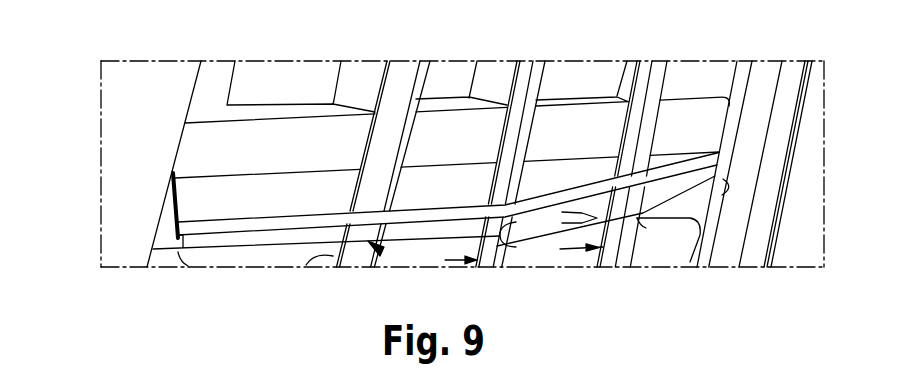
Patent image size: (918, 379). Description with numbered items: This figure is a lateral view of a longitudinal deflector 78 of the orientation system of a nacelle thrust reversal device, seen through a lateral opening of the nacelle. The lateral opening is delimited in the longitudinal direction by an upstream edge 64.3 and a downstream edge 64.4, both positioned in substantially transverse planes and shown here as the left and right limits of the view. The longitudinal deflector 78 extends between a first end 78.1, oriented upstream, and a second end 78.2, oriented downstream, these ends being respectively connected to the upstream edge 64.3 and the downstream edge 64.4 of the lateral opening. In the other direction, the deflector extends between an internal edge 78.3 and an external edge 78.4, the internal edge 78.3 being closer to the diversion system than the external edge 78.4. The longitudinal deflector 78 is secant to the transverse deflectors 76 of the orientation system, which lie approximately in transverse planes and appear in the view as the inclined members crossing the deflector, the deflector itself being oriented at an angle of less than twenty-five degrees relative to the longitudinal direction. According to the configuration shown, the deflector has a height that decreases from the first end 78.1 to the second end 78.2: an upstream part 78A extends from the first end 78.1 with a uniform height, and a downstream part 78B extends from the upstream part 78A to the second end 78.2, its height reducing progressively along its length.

The upstream edge 64.3 is at (137, 165).
The downstream edge 64.4 is at (783, 126).
The transverse deflector 76 is at (560, 249).
The longitudinal deflector 78 is at (293, 129).
The first end 78.1 is at (192, 163).
The second end 78.2 is at (727, 119).
The internal edge 78.3 is at (287, 223).
The external edge 78.4 is at (273, 107).
The upstream part 78A is at (326, 265).
The downstream part 78B is at (631, 237).